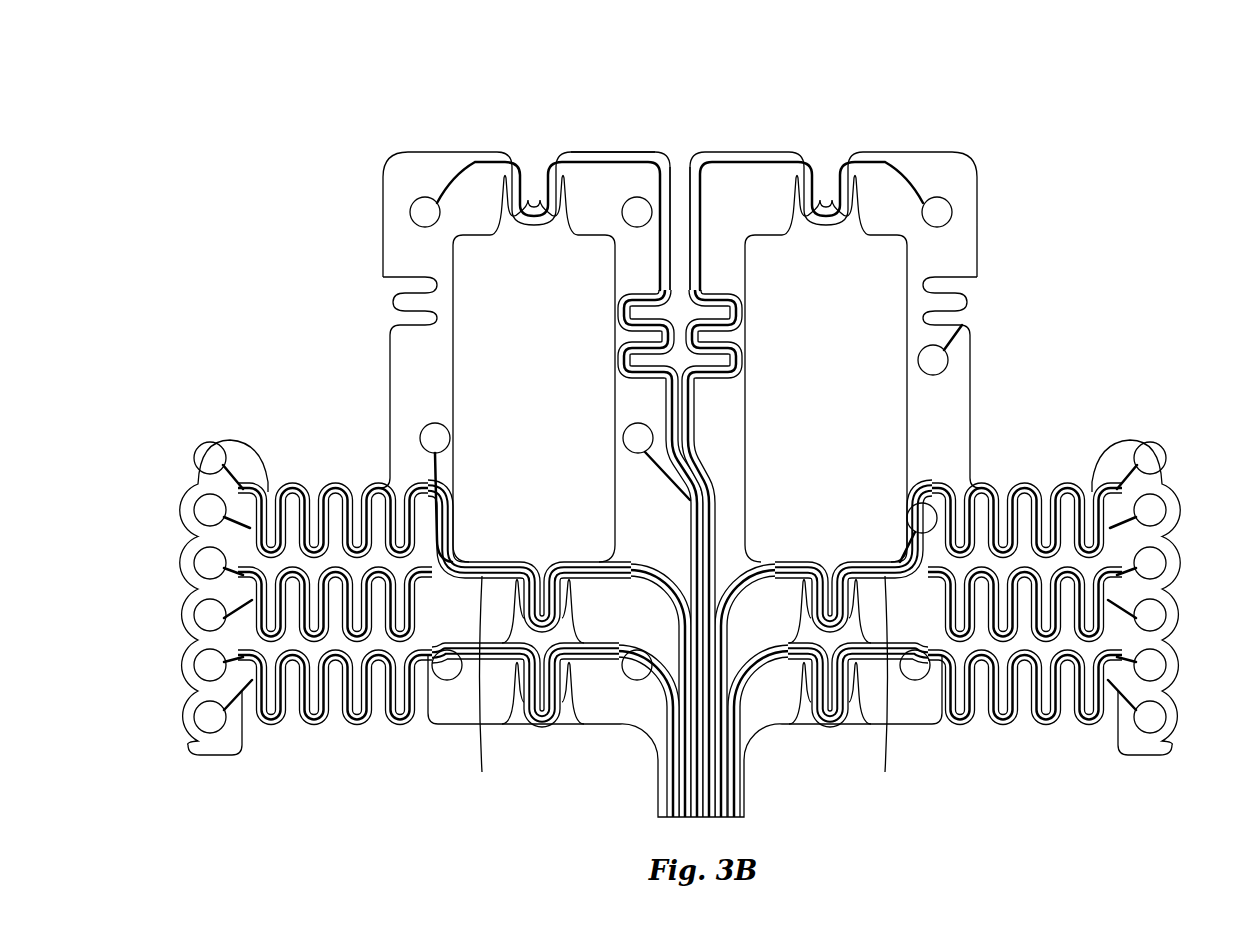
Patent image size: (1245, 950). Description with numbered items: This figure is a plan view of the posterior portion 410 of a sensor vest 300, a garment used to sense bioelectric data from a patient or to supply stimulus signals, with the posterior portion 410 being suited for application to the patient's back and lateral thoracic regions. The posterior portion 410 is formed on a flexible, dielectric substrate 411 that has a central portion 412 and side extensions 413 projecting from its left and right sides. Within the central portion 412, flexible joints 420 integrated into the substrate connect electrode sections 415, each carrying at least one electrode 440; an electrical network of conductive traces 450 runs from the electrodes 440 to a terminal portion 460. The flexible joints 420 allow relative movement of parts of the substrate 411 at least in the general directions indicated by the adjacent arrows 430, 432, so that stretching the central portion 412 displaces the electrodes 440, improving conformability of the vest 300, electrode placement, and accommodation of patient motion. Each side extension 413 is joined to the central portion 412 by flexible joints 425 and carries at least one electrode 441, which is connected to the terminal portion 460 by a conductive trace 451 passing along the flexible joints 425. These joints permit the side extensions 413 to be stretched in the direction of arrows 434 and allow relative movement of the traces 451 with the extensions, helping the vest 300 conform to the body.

The sensor vest 300 is at (703, 427).
The posterior portion 410 is at (622, 255).
The flexible, dielectric substrate 411 is at (585, 150).
The central portion 412 is at (702, 80).
The side extensions 413 is at (681, 542).
The electrode sections 415 is at (440, 348).
The flexible joints 420 is at (614, 298).
The flexible joints 425 is at (335, 732).
The arrows 430 is at (362, 278).
The arrows 432 is at (562, 126).
The arrows 434 is at (372, 462).
The electrode 440 is at (445, 690).
The electrode 441 is at (212, 440).
The conductive traces 450 is at (700, 160).
The conductive trace 451 is at (481, 766).
The terminal portion 460 is at (750, 804).